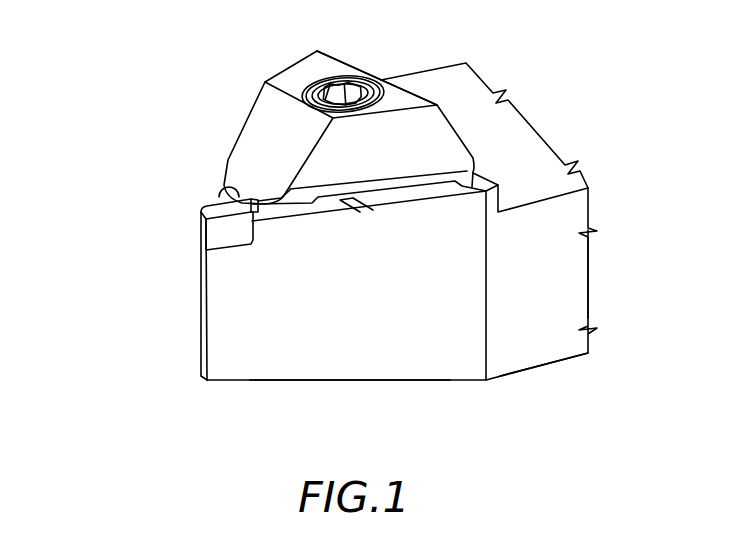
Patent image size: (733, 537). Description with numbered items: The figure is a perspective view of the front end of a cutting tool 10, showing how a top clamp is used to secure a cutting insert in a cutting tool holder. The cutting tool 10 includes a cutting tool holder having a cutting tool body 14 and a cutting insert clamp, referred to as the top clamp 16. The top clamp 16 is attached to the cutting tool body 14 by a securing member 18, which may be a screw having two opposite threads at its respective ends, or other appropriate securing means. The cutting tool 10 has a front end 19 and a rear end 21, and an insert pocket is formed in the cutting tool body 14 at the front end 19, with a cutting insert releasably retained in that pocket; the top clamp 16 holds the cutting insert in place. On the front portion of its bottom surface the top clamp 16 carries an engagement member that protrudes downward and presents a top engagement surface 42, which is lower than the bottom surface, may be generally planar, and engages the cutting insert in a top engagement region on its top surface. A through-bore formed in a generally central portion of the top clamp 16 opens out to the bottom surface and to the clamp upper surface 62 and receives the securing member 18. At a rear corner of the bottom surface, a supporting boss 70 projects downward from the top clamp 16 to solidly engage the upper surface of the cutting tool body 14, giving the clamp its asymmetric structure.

The cutting tool 10 is at (343, 249).
The cutting tool body 14 is at (172, 313).
The top clamp 16 is at (364, 221).
The securing member 18 is at (372, 67).
The front end 19 is at (229, 385).
The rear end 21 is at (575, 383).
The top engagement surface 42 is at (218, 198).
The clamp upper surface 62 is at (397, 98).
The supporting boss 70 is at (462, 172).